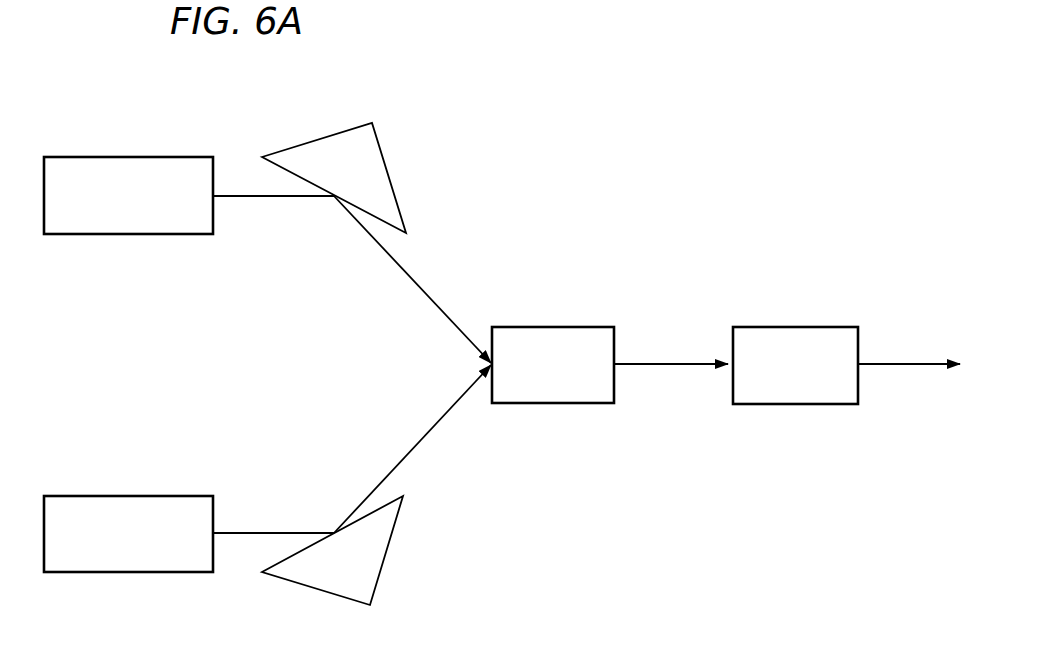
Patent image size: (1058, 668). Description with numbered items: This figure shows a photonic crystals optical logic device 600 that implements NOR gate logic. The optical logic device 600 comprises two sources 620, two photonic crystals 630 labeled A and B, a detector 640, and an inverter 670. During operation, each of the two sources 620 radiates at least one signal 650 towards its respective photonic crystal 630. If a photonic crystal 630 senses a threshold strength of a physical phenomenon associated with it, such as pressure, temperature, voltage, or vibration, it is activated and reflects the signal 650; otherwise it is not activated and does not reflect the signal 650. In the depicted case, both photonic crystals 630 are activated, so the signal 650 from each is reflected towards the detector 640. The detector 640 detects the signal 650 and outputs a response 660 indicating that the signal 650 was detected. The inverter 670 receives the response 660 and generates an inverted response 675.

The optical logic device 600 is at (776, 156).
The source 620 is at (143, 157).
The photonic crystal 630 is at (388, 163).
The detector 640 is at (555, 327).
The signal 650 is at (261, 196).
The response 660 is at (657, 364).
The inverter 670 is at (797, 327).
The inverted response 675 is at (898, 364).